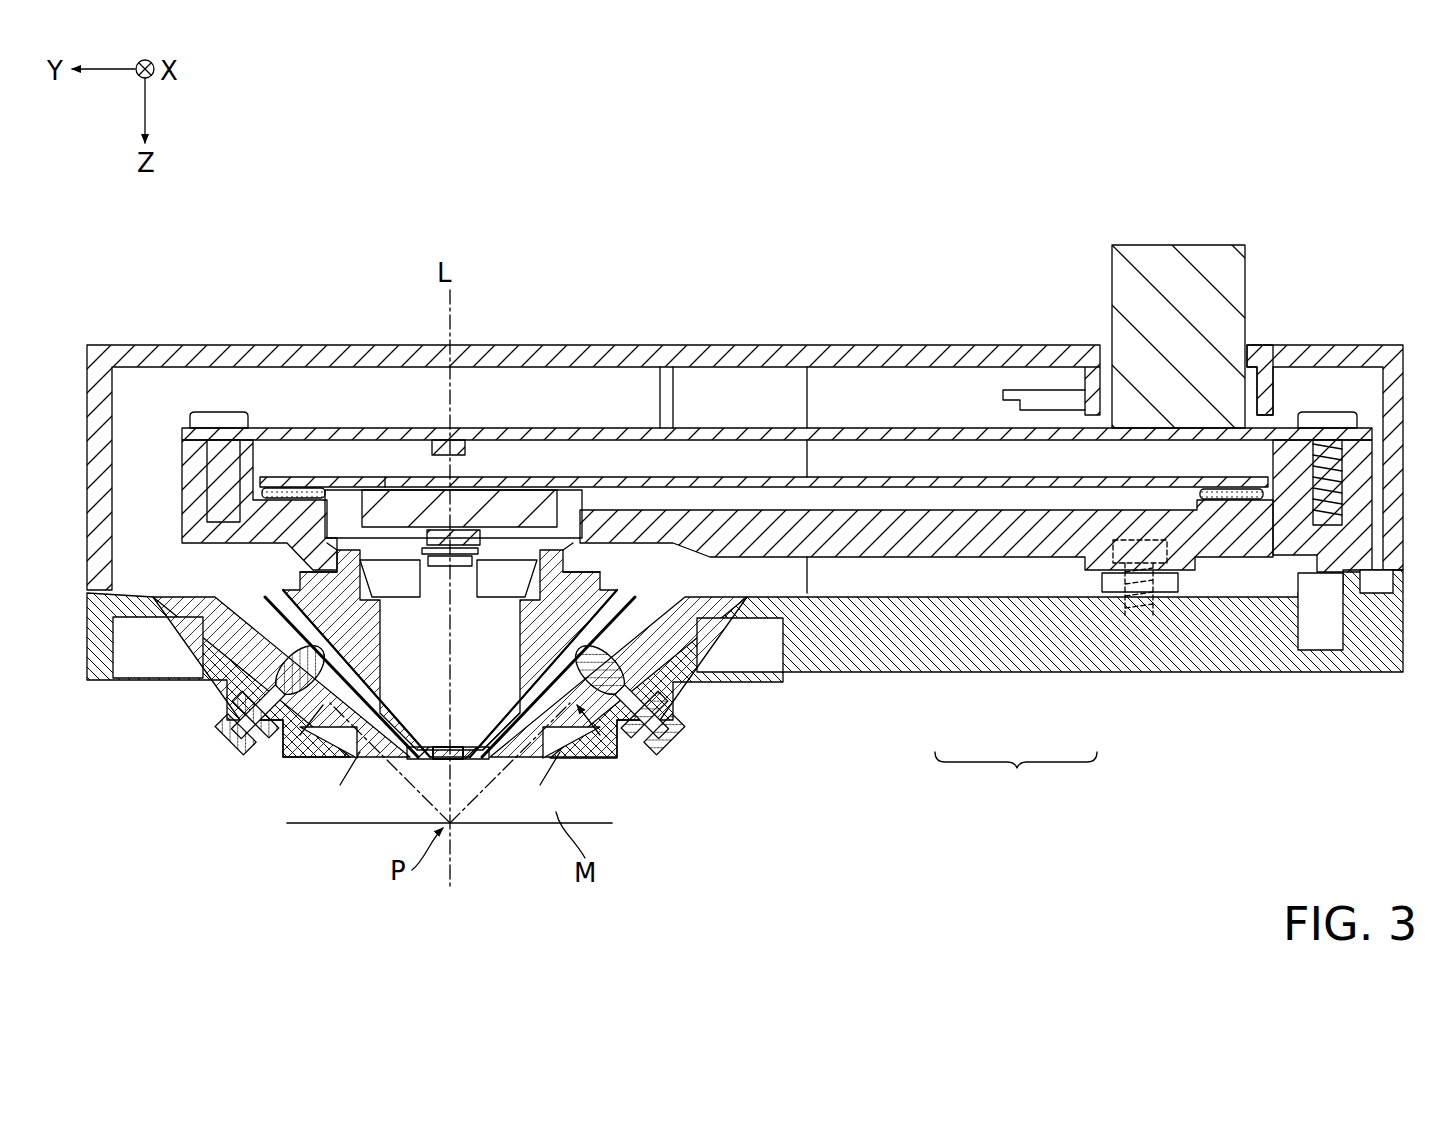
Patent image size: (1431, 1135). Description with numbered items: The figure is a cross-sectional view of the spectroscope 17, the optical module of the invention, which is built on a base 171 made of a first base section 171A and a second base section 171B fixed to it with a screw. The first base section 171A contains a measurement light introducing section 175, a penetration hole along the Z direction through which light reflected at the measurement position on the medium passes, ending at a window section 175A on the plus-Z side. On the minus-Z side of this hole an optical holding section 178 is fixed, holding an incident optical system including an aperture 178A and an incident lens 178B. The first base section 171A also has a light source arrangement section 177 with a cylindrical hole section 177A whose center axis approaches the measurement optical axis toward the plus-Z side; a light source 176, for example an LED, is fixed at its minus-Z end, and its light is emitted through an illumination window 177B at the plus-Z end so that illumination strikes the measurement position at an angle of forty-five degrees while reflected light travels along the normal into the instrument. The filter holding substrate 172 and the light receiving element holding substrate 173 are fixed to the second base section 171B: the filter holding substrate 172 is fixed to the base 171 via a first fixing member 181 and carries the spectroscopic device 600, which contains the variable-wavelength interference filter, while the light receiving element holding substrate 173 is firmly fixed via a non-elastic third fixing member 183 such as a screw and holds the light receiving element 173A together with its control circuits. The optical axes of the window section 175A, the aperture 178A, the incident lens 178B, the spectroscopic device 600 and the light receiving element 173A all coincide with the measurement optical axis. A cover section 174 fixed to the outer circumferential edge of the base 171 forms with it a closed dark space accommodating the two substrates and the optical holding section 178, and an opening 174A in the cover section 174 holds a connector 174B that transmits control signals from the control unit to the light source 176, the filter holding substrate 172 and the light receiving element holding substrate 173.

The spectroscope 17 is at (948, 290).
The base 171 is at (745, 648).
The first base section 171A is at (1047, 660).
The second base section 171B is at (1005, 545).
The filter holding substrate 172 is at (835, 477).
The light receiving element holding substrate 173 is at (640, 428).
The light receiving element 173A is at (456, 440).
The cover section 174 is at (274, 345).
The opening 174A is at (1252, 355).
The connector 174B is at (1160, 262).
The measurement light introducing section 175 is at (420, 760).
The window section 175A is at (453, 760).
The light source 176 is at (300, 690).
The light source arrangement section 177 is at (345, 722).
The cylindrical hole section 177A is at (325, 758).
The illumination window 177B is at (360, 748).
The optical holding section 178 is at (364, 548).
The aperture 178A is at (467, 568).
The incident lens 178B is at (427, 568).
The first fixing member 181 is at (290, 490).
The third fixing member 183 is at (205, 412).
The spectroscopic device 600 is at (512, 505).